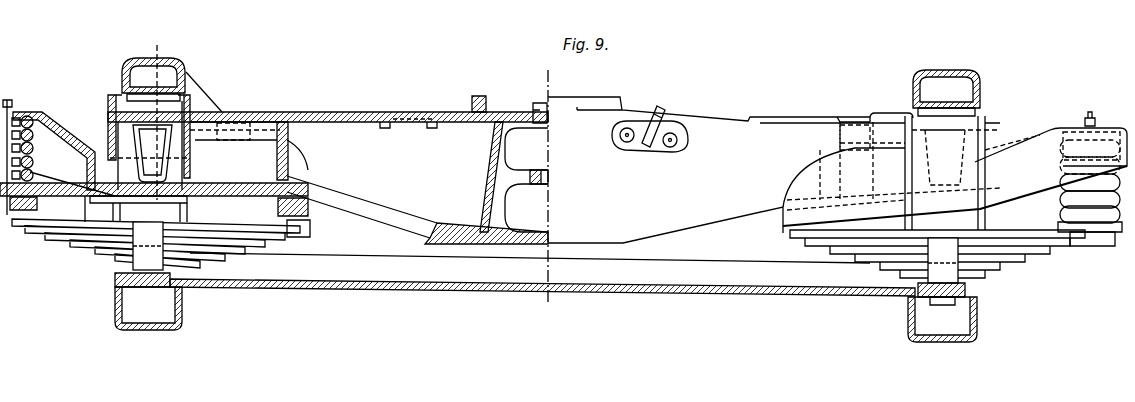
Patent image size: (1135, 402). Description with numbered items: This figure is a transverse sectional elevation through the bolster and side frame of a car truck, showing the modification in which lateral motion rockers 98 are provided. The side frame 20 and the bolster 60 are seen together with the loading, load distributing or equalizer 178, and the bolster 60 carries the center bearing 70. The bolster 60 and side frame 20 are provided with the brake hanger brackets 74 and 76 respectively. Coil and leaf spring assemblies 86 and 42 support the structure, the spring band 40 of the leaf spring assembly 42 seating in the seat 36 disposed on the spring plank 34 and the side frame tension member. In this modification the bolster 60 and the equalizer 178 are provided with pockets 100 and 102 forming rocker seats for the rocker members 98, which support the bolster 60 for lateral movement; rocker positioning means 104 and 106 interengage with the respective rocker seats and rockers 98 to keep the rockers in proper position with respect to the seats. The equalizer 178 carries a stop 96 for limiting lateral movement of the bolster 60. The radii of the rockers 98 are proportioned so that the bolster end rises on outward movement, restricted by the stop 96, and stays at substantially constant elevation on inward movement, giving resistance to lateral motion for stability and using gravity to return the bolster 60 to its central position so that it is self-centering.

The side frame 20 is at (179, 66).
The spring plank 34 is at (289, 290).
The seat 36 is at (168, 278).
The spring band 40 is at (158, 245).
The leaf spring assembly 42 is at (88, 243).
The bolster 60 is at (412, 112).
The center bearing 70 is at (486, 100).
The brake hanger bracket 74 is at (664, 122).
The brake hanger bracket 76 is at (897, 103).
The coil spring assembly 86 is at (33, 150).
The stop 96 is at (72, 187).
The lateral motion rocker 98 is at (205, 114).
The pocket 100 is at (140, 118).
The pocket 102 is at (188, 196).
The rocker positioning means 104 is at (154, 115).
The rocker positioning means 106 is at (110, 200).
The equalizer 178 is at (56, 110).